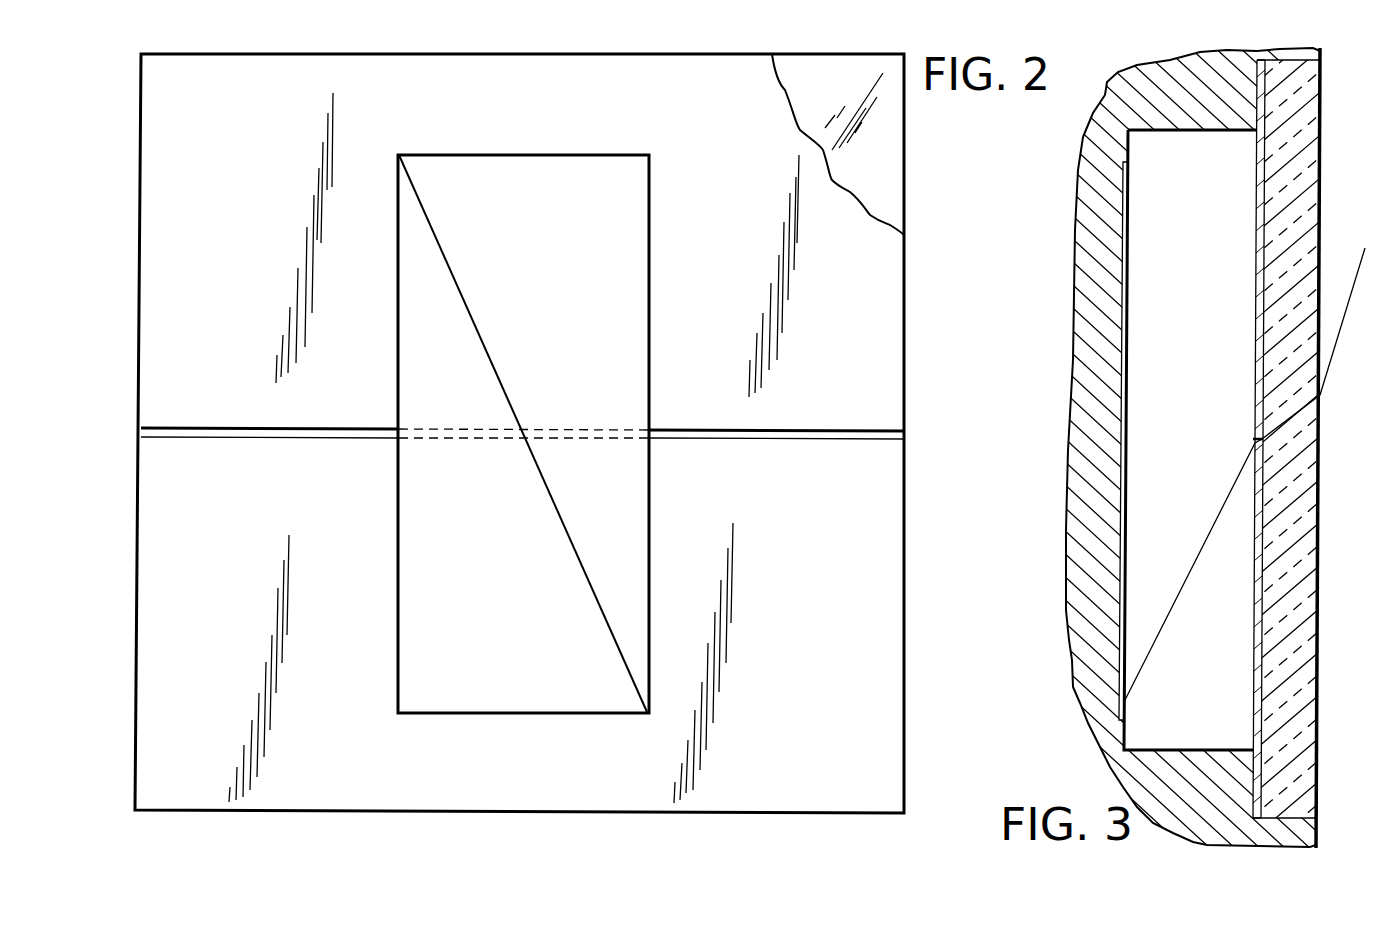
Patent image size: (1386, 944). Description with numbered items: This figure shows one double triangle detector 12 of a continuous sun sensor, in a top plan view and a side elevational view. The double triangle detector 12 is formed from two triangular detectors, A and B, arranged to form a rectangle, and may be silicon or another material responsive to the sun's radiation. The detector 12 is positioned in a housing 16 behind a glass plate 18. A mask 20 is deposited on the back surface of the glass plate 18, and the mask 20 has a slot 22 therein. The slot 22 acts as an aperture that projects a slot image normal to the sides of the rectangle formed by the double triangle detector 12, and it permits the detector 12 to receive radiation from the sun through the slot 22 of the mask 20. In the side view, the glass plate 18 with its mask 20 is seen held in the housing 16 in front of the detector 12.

In FIG. 2, the double triangle detector 12 is at (587, 713).
In FIG. 3, the double triangle detector 12 is at (1122, 325).
In FIG. 3, the housing 16 is at (1303, 835).
In FIG. 2, the glass plate 18 is at (890, 188).
In FIG. 3, the glass plate 18 is at (1303, 617).
In FIG. 2, the mask 20 is at (883, 576).
In FIG. 3, the mask 20 is at (1255, 258).
In FIG. 2, the slot 22 is at (887, 440).
In FIG. 3, the slot 22 is at (1257, 442).